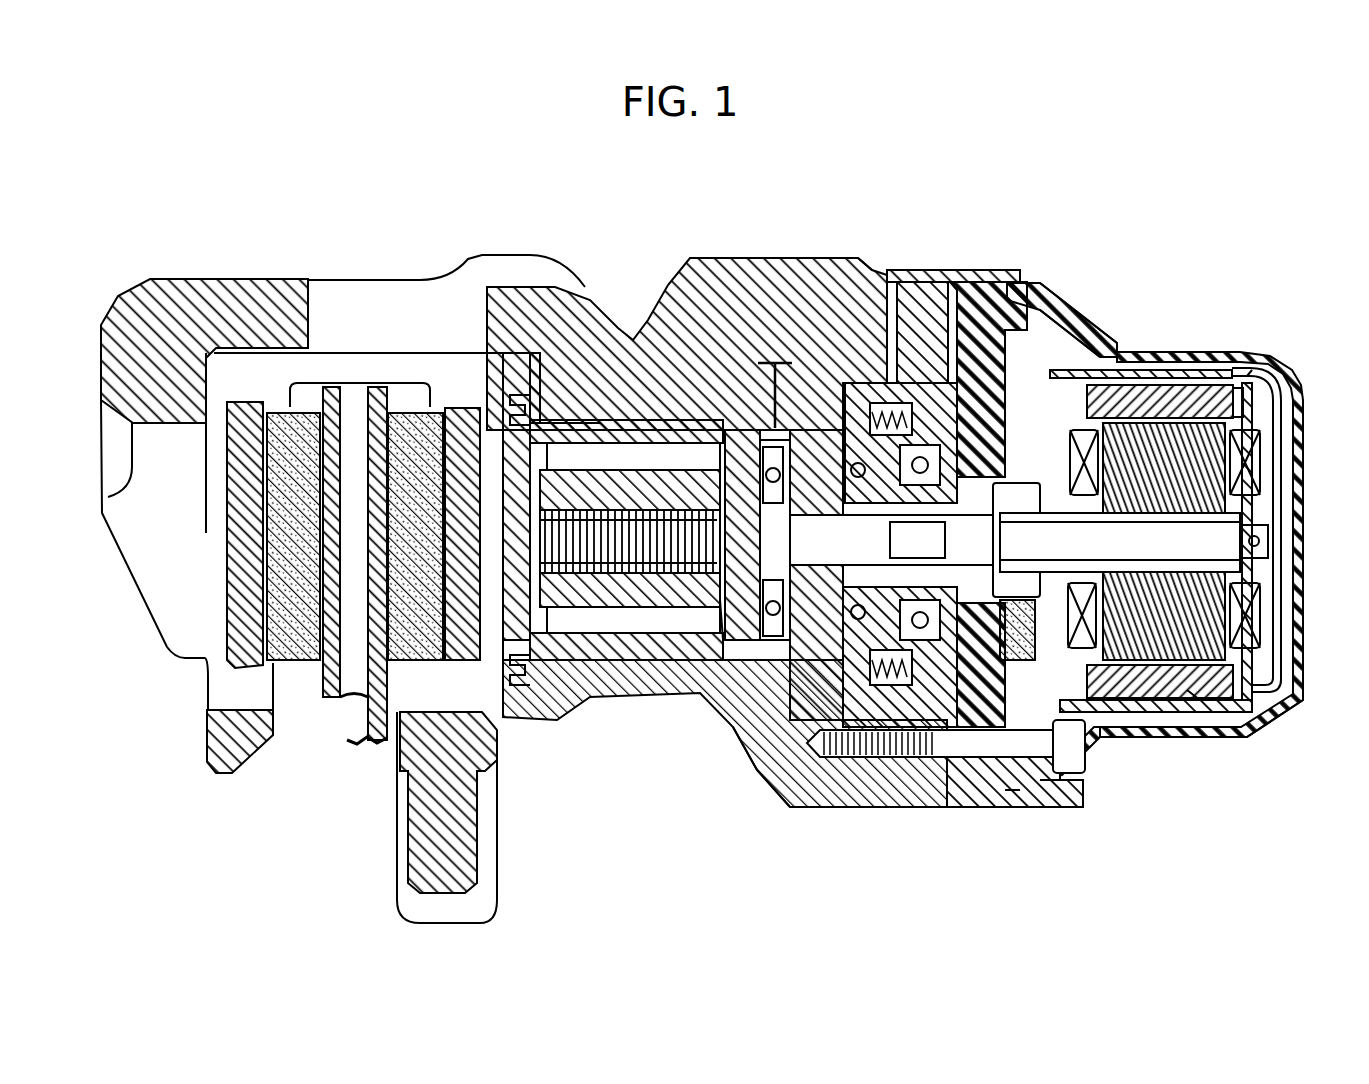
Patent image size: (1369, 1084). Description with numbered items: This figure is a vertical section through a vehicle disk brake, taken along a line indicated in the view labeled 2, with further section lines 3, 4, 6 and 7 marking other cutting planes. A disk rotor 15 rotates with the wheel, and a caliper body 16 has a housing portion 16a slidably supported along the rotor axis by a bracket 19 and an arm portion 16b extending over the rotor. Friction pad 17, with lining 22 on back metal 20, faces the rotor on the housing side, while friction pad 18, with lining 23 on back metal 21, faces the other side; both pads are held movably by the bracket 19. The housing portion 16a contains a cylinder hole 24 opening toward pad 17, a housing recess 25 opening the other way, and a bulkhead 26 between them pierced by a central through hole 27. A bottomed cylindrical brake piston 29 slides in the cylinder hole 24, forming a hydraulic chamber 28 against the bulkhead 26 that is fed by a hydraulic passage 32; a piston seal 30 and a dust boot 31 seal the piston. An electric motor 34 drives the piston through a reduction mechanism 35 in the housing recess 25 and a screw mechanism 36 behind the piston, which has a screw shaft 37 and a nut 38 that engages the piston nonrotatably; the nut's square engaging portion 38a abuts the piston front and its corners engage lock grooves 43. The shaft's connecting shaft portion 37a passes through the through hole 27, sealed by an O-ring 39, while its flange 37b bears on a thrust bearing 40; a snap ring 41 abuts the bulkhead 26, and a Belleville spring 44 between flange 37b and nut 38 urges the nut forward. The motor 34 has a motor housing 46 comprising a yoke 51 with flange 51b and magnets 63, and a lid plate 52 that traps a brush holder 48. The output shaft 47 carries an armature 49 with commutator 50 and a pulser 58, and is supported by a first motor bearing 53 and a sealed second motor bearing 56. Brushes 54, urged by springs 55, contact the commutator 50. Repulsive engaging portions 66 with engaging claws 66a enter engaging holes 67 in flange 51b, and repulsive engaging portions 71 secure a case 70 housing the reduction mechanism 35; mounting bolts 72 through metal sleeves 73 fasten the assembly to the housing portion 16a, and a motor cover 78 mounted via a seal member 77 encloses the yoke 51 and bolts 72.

The direction of view arrow 2 is at (1312, 545).
The section line 3- 3 is at (680, 407).
The section line 4- 4 is at (533, 377).
The section line 6- 6 is at (1047, 245).
The section line 7- 7 is at (952, 245).
The disk rotor 15 is at (353, 402).
The caliper body 16 is at (688, 258).
The housing portion 16a is at (823, 265).
The arm portion 16b is at (238, 296).
The friction pad 17 is at (417, 667).
The friction pad 18 is at (218, 612).
The bracket 19 is at (422, 823).
The back metal 20 is at (462, 420).
The back metal 21 is at (240, 555).
The lining 22 is at (404, 420).
The lining 23 is at (283, 410).
The cylinder hole 24 is at (630, 428).
The housing recess 25 is at (878, 397).
The bulkhead 26 is at (745, 430).
The through hole 27 is at (845, 700).
The hydraulic chamber 28 is at (722, 600).
The brake piston 29 is at (640, 650).
The piston seal 30 is at (612, 355).
The dust boot 31 is at (510, 672).
The hydraulic passage 32 is at (770, 362).
The electric motor 34 is at (1262, 412).
The reduction mechanism 35 is at (873, 790).
The screw mechanism 36 is at (622, 614).
The screw shaft 37 is at (628, 530).
The connecting shaft portion 37a is at (815, 440).
The flange 37b is at (757, 600).
The nut 38 is at (600, 590).
The engaging portion 38a is at (571, 603).
The O-ring 39 is at (780, 517).
The thrust bearing 40 is at (784, 740).
The snap ring 41 is at (995, 483).
The lock grooves 43 is at (672, 630).
The Belleville spring 44 is at (680, 520).
The motor housing 46 is at (1100, 370).
The output shaft 47 is at (1217, 523).
The brush holder 48 is at (1050, 272).
The armature 49 is at (1260, 637).
The commutator 50 is at (1023, 490).
The yoke 51 is at (1203, 368).
The flange 51b is at (1097, 780).
The lid plate 52 is at (917, 780).
The first motor bearing 53 is at (1268, 553).
The brushes 54 is at (1027, 630).
The springs 55 is at (1110, 713).
The second motor bearing 56 is at (935, 577).
The pulser 58 is at (1065, 588).
The magnets 63 is at (1247, 376).
The repulsive engaging portions 66 is at (1085, 272).
The engaging claws 66a is at (1072, 318).
The engaging holes 67 is at (1030, 360).
The case 70 is at (857, 378).
The repulsive engaging portions 71 is at (897, 320).
The mounting bolts 72 is at (1008, 807).
The sleeves 73 is at (1012, 790).
The seal member 77 is at (1042, 807).
The motor cover 78 is at (1253, 730).